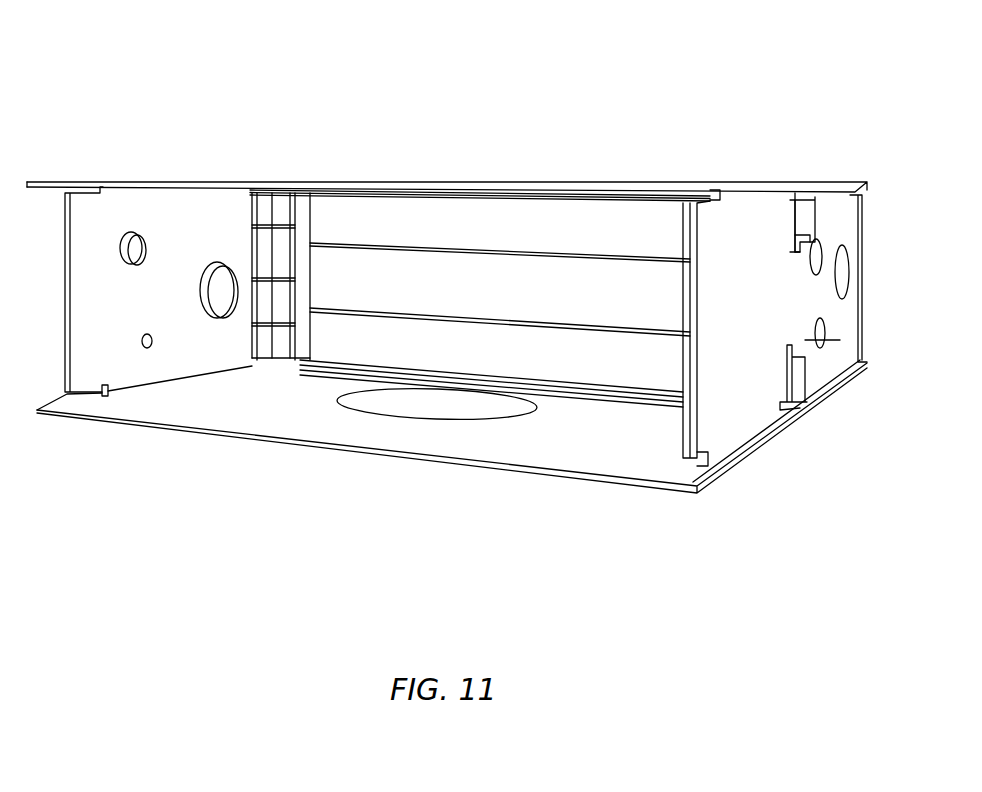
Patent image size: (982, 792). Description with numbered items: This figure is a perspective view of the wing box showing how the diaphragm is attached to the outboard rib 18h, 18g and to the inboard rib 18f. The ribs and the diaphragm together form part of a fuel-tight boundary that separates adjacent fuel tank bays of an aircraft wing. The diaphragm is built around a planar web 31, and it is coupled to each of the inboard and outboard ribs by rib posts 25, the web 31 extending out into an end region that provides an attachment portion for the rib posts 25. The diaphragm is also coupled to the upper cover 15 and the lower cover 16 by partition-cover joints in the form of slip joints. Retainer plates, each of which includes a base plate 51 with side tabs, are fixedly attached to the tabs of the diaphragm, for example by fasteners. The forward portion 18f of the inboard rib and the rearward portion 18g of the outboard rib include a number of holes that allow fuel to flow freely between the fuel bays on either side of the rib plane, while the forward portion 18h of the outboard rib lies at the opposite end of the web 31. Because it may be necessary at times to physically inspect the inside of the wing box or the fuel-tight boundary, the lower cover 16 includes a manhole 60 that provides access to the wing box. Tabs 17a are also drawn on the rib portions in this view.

The upper cover 15 is at (657, 182).
The lower cover 16 is at (613, 477).
The tab 17a is at (805, 225).
The forward portion of the inboard rib 18f is at (165, 232).
The rearward portion of the outboard rib 18g is at (835, 333).
The forward portion of the outboard rib 18h is at (750, 232).
The rib post 25 is at (281, 215).
The web 31 is at (479, 290).
The base plate 51 is at (378, 222).
The manhole 60 is at (432, 410).